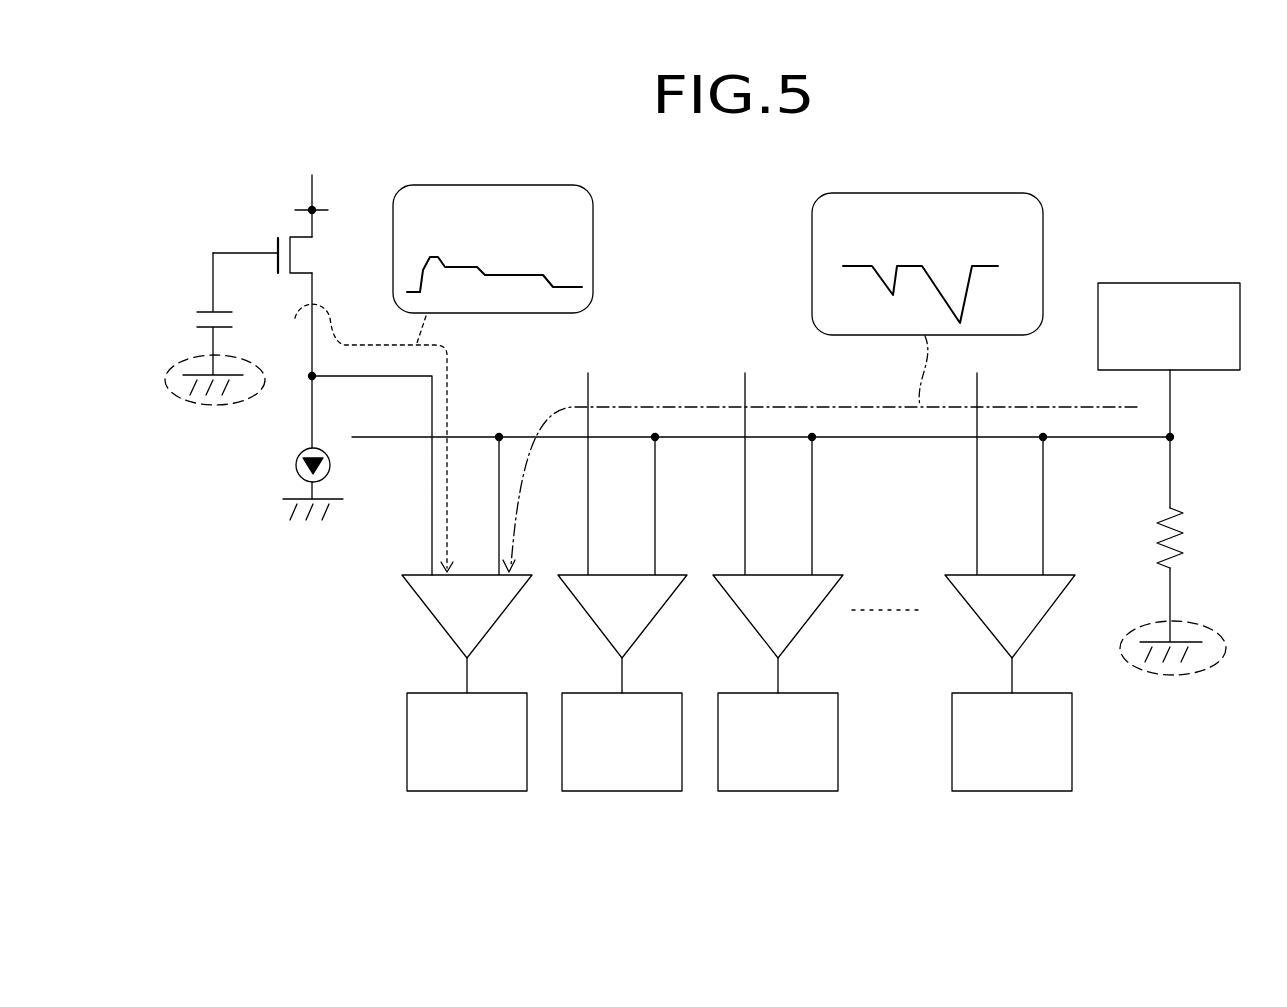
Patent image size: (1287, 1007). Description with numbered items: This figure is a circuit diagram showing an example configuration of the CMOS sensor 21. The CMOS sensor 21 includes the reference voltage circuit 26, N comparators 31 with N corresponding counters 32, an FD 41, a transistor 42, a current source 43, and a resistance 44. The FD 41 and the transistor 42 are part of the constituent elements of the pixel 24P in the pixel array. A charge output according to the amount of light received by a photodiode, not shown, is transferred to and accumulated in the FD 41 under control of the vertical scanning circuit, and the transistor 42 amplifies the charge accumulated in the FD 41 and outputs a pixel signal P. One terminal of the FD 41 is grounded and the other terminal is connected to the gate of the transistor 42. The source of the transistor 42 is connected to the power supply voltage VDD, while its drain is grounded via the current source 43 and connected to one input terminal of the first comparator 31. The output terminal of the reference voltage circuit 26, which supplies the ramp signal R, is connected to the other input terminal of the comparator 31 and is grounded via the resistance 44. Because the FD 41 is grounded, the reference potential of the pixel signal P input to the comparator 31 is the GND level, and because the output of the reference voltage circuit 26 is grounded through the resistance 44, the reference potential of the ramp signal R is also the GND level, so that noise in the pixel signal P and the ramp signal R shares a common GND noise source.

The CMOS sensor 21 is at (282, 675).
The pixel 24P is at (350, 240).
The reference voltage circuit 26 is at (1168, 283).
The comparator 31 is at (987, 624).
The counter 32 is at (1012, 825).
The FD 41 is at (205, 310).
The transistor 42 is at (278, 242).
The current source 43 is at (296, 463).
The resistance 44 is at (1186, 535).